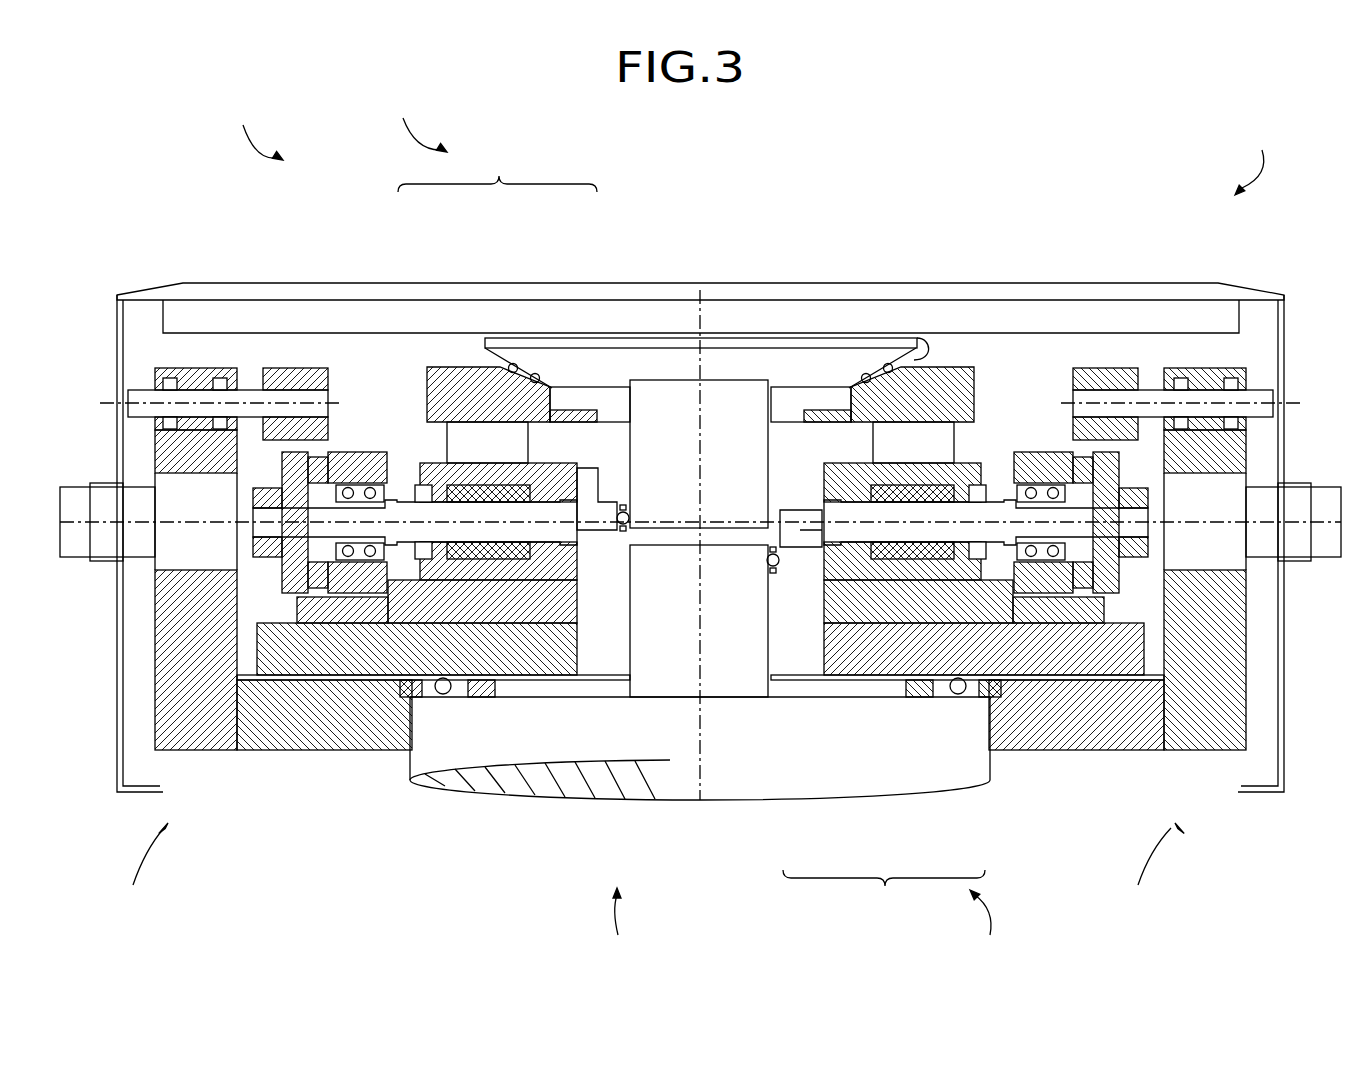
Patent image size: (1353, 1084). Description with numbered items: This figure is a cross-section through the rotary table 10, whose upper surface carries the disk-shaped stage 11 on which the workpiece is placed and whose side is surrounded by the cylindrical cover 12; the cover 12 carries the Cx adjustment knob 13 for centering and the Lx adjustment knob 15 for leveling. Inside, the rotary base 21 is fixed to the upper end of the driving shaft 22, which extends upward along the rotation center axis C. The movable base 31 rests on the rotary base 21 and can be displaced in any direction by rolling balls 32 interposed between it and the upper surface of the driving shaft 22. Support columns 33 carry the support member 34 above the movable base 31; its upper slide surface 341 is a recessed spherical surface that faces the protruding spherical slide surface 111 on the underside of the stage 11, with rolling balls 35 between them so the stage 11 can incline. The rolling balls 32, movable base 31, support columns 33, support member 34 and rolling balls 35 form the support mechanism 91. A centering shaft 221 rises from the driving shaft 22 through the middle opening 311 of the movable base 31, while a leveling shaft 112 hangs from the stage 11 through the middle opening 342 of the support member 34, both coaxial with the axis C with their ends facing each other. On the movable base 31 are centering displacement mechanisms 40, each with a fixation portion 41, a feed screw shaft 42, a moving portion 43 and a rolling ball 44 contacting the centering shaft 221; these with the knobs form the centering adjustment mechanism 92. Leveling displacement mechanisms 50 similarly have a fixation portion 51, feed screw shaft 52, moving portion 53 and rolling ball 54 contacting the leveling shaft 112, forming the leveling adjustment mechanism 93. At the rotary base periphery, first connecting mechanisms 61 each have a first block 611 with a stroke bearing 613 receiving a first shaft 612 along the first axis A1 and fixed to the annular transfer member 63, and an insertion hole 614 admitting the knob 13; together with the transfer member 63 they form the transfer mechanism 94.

The rotary table 10 is at (1256, 157).
The stage 11 is at (1222, 285).
The cover 12 is at (1288, 293).
The Cx adjustment knob 13 is at (1320, 488).
The Lx adjustment knob 15 is at (78, 488).
The slide surface 111 is at (918, 338).
The leveling shaft 112 is at (738, 405).
The rotary base 21 is at (326, 700).
The driving shaft 22 is at (670, 740).
The centering shaft 221 is at (680, 632).
The movable base 31 is at (530, 660).
The middle opening 311 is at (582, 620).
The rolling balls 32 is at (444, 695).
The support columns 33 is at (1000, 365).
The support member 34 is at (948, 430).
The slide surface 341 is at (852, 350).
The middle opening 342 is at (795, 405).
The rolling balls 35 is at (890, 360).
The centering displacement mechanisms 40 is at (965, 687).
The fixation portion 41 is at (1035, 580).
The feed screw shaft 42 is at (905, 540).
The moving portion 43 is at (850, 560).
The rolling ball 44 is at (778, 568).
The leveling displacement mechanisms 50 is at (425, 368).
The fixation portion 51 is at (405, 500).
The feed screw shaft 52 is at (447, 462).
The moving portion 53 is at (563, 458).
The rolling ball 54 is at (628, 512).
The first connecting mechanisms 61 is at (651, 870).
The first block 611 is at (198, 720).
The first shaft 612 is at (243, 385).
The stroke bearing 613 is at (200, 375).
The insertion hole 614 is at (155, 572).
The transfer member 63 is at (295, 370).
The support mechanism 91 is at (618, 925).
The centering adjustment mechanism 92 is at (986, 926).
The leveling adjustment mechanism 93 is at (417, 120).
The transfer mechanism 94 is at (255, 128).
The first axis A1 is at (78, 403).
The rotation center axis C is at (698, 290).